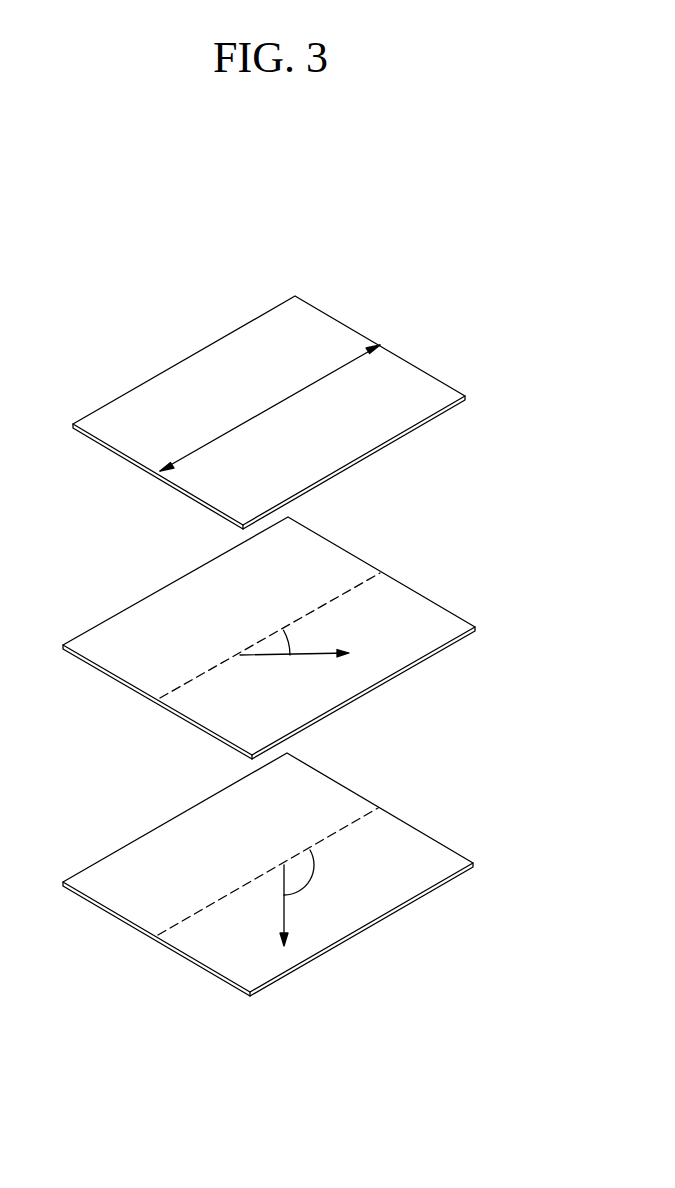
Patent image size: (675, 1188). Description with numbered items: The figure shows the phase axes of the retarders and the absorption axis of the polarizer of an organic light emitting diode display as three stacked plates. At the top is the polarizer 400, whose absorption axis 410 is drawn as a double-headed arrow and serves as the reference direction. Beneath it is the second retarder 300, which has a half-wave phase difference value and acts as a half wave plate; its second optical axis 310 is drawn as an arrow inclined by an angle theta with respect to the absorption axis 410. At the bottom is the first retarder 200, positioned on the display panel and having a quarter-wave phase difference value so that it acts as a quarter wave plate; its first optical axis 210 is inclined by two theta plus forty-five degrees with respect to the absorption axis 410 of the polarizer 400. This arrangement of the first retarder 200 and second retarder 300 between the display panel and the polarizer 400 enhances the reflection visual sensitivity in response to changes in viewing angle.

The polarizer 400 is at (442, 380).
The absorption axis 410 is at (355, 353).
The second retarder 300 is at (448, 611).
The second optical axis 310 is at (313, 657).
The first retarder 200 is at (450, 846).
The first optical axis 210 is at (286, 913).